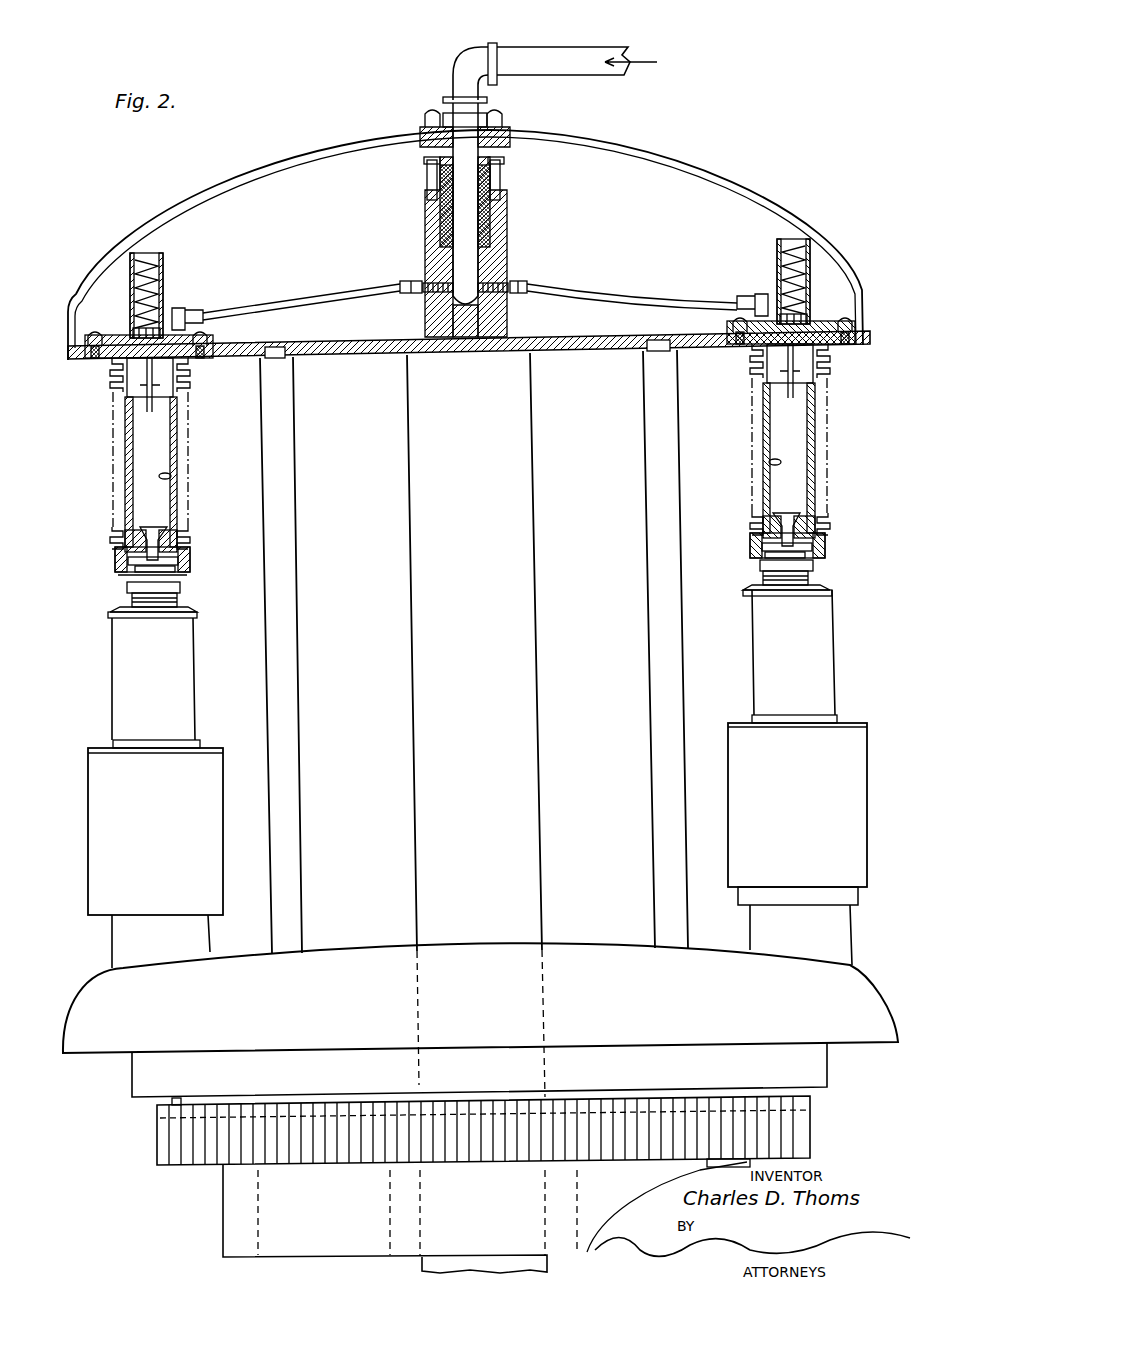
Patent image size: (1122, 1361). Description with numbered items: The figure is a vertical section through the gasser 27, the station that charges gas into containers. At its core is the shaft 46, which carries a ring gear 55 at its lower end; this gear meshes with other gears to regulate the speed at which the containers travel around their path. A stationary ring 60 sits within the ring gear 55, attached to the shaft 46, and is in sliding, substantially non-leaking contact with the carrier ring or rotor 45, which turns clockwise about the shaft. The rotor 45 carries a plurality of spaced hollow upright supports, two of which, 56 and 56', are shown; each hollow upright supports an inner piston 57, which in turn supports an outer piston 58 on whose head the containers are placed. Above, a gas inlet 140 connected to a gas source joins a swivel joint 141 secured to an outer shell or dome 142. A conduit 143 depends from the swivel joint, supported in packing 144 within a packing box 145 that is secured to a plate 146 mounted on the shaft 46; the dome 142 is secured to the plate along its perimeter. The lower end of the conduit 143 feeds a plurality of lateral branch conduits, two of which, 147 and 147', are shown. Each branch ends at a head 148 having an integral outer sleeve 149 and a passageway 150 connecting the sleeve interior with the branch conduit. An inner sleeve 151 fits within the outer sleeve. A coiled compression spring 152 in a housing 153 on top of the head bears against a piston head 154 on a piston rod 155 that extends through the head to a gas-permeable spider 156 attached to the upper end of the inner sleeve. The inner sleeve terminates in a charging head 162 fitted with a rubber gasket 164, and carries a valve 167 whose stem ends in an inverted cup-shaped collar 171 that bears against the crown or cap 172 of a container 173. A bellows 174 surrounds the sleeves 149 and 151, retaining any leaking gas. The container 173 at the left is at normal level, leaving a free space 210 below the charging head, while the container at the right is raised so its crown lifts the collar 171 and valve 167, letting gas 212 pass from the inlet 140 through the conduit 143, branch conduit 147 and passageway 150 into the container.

The gasser 27 is at (340, 928).
The carrier ring or rotor 45 is at (113, 1033).
The shaft 46 is at (412, 708).
The ring gear 55 is at (155, 1148).
The hollow upright support 56 is at (135, 941).
The hollow upright support 56' is at (824, 935).
The inner piston 57 is at (845, 900).
The outer piston 58 is at (88, 840).
The stationary ring 60 is at (222, 1218).
The gas inlet 140 is at (612, 72).
The swivel joint 141 is at (422, 122).
The outer shell or dome 142 is at (327, 145).
The conduit 143 is at (460, 190).
The packing 144 is at (500, 213).
The packing box 145 is at (425, 257).
The plate 146 is at (566, 352).
The lateral branch conduit 147 is at (312, 298).
The lateral branch conduit 147' is at (623, 287).
The head 148 is at (92, 360).
The outer sleeve 149 is at (188, 443).
The passageway 150 is at (188, 360).
The inner sleeve 151 is at (172, 482).
The coiled compression spring 152 is at (165, 278).
The housing 153 is at (150, 268).
The piston head 154 is at (132, 328).
The piston rod 155 is at (140, 383).
The spider 156 is at (128, 412).
The charging head 162 is at (193, 558).
The rubber gasket 164 is at (190, 568).
The valve 167 is at (162, 535).
The inverted cup-shaped collar 171 is at (175, 575).
The crown or cap 172 is at (175, 590).
The container 173 is at (112, 653).
The bellows 174 is at (112, 535).
The free space 210 is at (125, 580).
The gas 212 is at (683, 56).